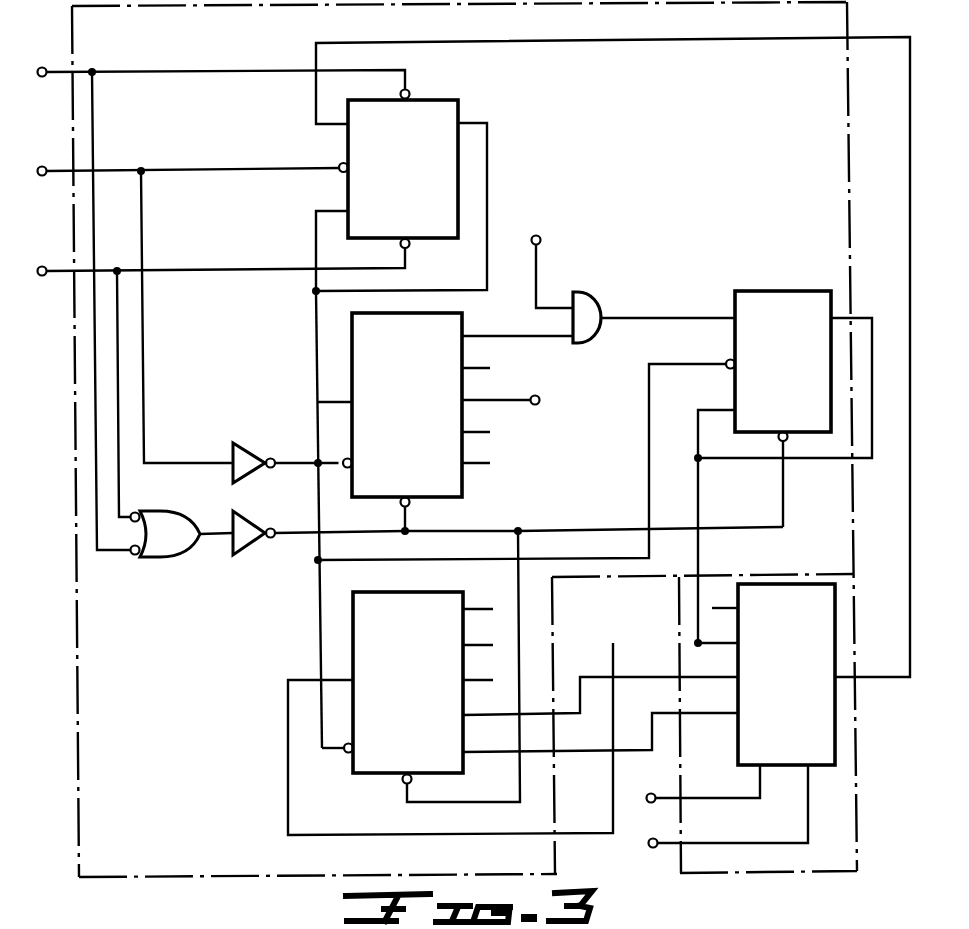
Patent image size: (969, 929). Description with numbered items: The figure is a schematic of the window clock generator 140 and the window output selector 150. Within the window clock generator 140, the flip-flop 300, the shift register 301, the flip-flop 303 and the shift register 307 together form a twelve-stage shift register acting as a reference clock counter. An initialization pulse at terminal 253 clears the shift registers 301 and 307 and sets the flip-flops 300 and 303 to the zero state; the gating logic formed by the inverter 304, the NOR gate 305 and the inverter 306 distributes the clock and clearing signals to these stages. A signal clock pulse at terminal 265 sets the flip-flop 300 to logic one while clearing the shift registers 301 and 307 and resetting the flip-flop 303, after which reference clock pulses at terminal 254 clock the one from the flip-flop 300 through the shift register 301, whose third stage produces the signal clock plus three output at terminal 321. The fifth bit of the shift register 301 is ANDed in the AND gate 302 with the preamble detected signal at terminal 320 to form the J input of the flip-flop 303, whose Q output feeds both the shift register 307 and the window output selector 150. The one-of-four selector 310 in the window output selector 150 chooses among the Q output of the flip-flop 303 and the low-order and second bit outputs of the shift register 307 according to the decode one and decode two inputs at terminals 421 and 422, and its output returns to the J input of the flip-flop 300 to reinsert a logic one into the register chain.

The window clock generator 140 is at (854, 24).
The window output selector 150 is at (864, 806).
The initialization pulse input 253 is at (38, 271).
The reference clock input 254 is at (38, 171).
The signal clock input 265 is at (38, 72).
The flip-flop 300 is at (435, 100).
The shift register 301 is at (457, 313).
The AND gate 302 is at (589, 292).
The flip-flop 303 is at (778, 291).
The inverter 304 is at (252, 452).
The NOR gate 305 is at (172, 511).
The inverter 306 is at (254, 522).
The shift register 307 is at (417, 592).
The one-of-four selector 310 is at (738, 752).
The preamble detected signal 320 is at (538, 236).
The signal clock +3 output 321 is at (533, 395).
The decode one input 421 is at (647, 794).
The decode two input 422 is at (652, 848).